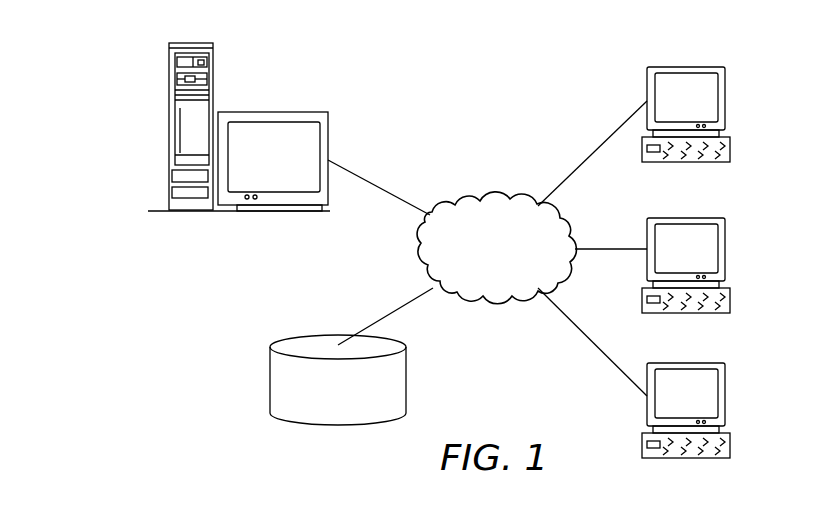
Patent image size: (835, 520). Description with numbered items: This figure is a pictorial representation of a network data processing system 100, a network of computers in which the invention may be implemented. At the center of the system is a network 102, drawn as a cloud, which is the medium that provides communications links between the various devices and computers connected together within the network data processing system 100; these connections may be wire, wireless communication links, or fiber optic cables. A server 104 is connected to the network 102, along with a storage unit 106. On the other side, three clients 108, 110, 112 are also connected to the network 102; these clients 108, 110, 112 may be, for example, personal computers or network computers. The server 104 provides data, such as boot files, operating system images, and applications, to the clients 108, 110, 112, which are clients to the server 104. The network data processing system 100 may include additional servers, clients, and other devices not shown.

The network data processing system 100 is at (552, 74).
The network 102 is at (465, 197).
The server 104 is at (170, 128).
The storage unit 106 is at (270, 378).
The client 108 is at (727, 100).
The client 110 is at (727, 250).
The client 112 is at (727, 395).